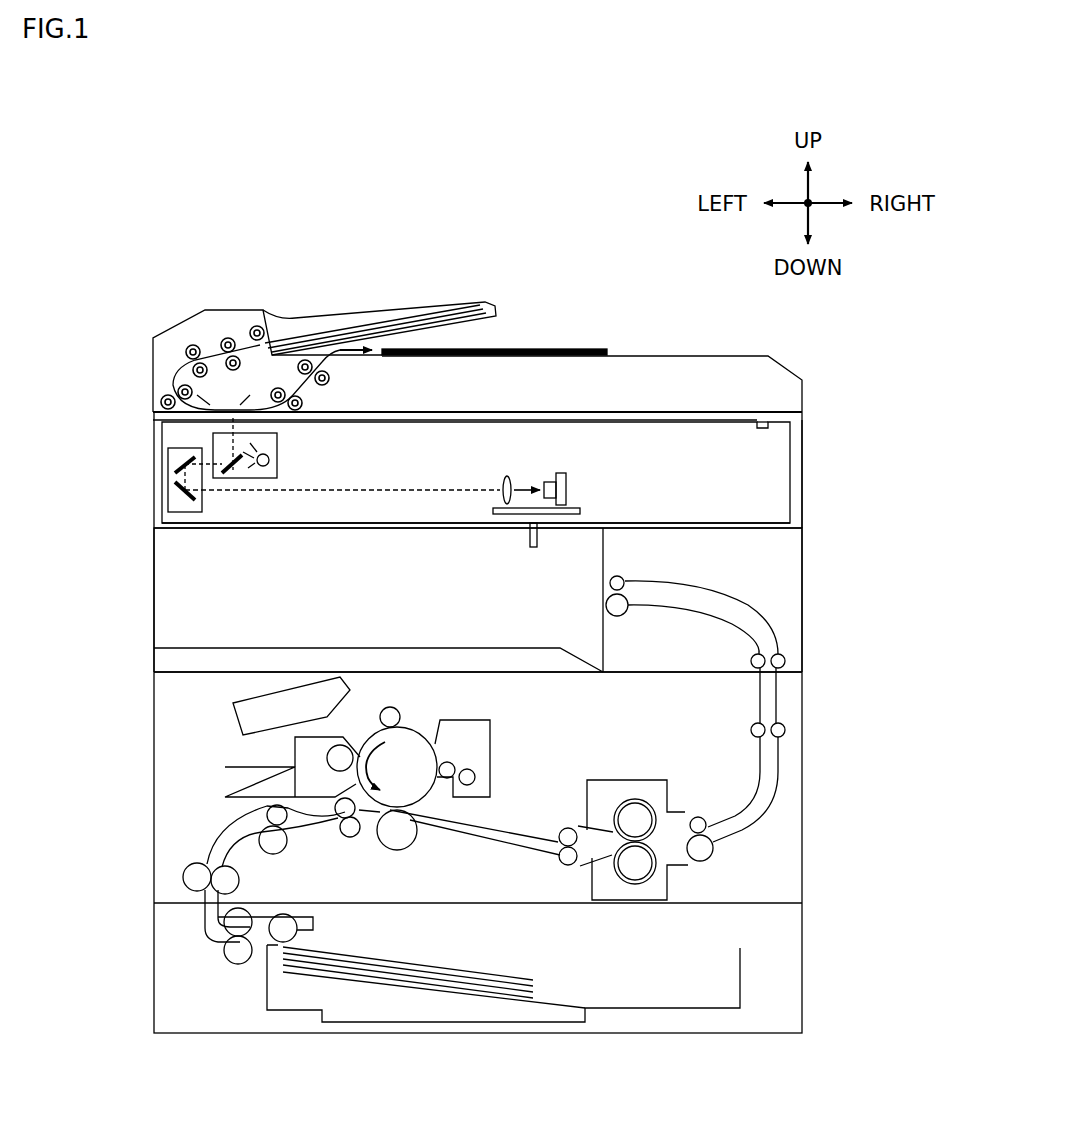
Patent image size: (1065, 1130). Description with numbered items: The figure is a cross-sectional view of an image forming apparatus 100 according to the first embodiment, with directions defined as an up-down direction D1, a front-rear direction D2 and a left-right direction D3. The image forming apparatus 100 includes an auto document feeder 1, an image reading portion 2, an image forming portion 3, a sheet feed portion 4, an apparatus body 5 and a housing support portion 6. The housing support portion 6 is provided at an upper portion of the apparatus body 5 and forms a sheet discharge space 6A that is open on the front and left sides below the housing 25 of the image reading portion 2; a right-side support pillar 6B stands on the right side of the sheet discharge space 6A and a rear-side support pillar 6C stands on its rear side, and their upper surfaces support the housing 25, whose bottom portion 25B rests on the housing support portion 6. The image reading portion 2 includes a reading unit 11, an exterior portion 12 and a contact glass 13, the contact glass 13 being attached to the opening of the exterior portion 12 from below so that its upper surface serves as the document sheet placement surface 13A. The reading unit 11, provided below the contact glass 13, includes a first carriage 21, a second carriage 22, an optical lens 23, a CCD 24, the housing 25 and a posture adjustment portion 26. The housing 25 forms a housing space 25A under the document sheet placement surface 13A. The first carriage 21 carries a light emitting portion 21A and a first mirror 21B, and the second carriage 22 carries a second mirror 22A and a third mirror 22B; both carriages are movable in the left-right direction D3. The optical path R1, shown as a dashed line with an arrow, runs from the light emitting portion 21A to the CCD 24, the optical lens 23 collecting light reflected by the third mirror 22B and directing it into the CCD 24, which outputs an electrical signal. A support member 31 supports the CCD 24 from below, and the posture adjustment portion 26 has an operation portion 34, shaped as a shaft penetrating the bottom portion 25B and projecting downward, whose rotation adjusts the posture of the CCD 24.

The image forming apparatus 100 is at (153, 242).
The auto document feeder 1 is at (424, 287).
The image reading portion 2 is at (838, 389).
The image forming portion 3 is at (180, 693).
The sheet feed portion 4 is at (180, 847).
The apparatus body 5 is at (803, 765).
The housing support portion 6 is at (835, 536).
The sheet discharge space 6A is at (206, 600).
The right-side support pillar 6B is at (803, 588).
The rear-side support pillar 6C is at (153, 562).
The reading unit 11 is at (803, 432).
The exterior portion 12 is at (802, 461).
The contact glass 13 is at (651, 428).
The document sheet placement surface 13A is at (672, 412).
The first carriage 21 is at (278, 465).
The light emitting portion 21A is at (274, 452).
The first mirror 21B is at (242, 474).
The second carriage 22 is at (168, 480).
The second mirror 22A is at (176, 465).
The third mirror 22B is at (182, 500).
The optical lens 23 is at (510, 476).
The charge coupled device (CCD) 24 is at (563, 473).
The housing 25 is at (790, 490).
The housing space 25A is at (700, 448).
The bottom portion 25B is at (346, 526).
The posture adjustment portion 26 is at (601, 510).
The support member 31 is at (514, 515).
The operation portion 34 is at (540, 540).
The optical path R1 is at (392, 490).
The up-down direction D1 is at (810, 192).
The front-rear direction D2 is at (805, 207).
The left-right direction D3 is at (820, 207).